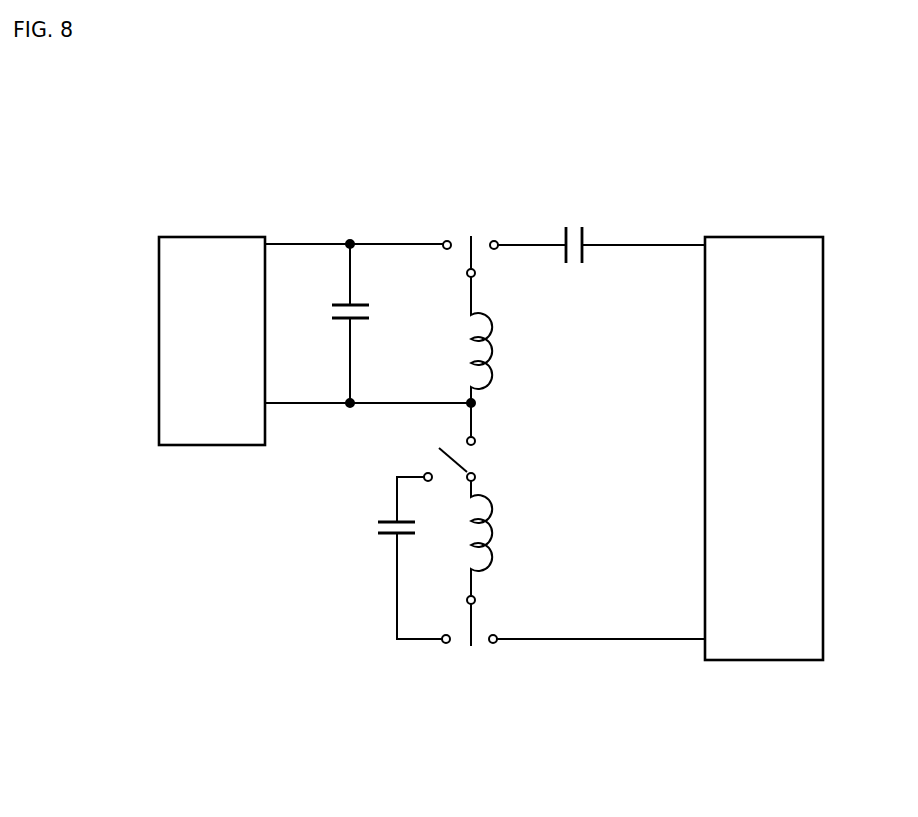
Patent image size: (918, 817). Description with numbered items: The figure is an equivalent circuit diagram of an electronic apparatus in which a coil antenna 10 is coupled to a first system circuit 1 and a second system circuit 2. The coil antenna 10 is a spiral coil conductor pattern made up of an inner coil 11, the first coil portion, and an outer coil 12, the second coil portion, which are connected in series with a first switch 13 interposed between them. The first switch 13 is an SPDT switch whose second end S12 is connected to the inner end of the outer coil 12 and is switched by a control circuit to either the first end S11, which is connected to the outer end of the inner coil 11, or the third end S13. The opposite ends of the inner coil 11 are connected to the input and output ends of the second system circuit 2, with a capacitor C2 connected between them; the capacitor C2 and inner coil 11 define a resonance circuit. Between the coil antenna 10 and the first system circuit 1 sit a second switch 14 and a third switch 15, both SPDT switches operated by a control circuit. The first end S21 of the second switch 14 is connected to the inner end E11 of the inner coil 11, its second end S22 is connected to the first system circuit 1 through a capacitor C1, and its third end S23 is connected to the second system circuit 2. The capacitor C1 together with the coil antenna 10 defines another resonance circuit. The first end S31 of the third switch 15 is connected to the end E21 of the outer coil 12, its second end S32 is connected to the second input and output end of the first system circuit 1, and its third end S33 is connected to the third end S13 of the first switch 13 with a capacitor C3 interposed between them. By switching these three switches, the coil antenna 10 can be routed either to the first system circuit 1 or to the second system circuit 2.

The first system circuit 1 is at (766, 236).
The second system circuit 2 is at (186, 236).
The coil antenna 10 is at (516, 437).
The inner coil 11 is at (496, 339).
The outer coil 12 is at (496, 539).
The first switch 13 is at (452, 448).
The second switch 14 is at (467, 226).
The third switch 15 is at (472, 642).
The capacitor C1 is at (592, 250).
The capacitor C2 is at (358, 323).
The capacitor C3 is at (402, 558).
The inner end of the inner coil E11 is at (494, 338).
The outer end of the outer coil E21 is at (494, 539).
The first end of the first switch S11 is at (456, 427).
The second end of the first switch S12 is at (491, 476).
The third end of the first switch S13 is at (430, 449).
The first end of the second switch S21 is at (455, 279).
The second end of the second switch S22 is at (507, 233).
The third end of the second switch S23 is at (430, 233).
The first end of the third switch S31 is at (453, 588).
The second end of the third switch S32 is at (510, 628).
The third end of the third switch S33 is at (431, 651).